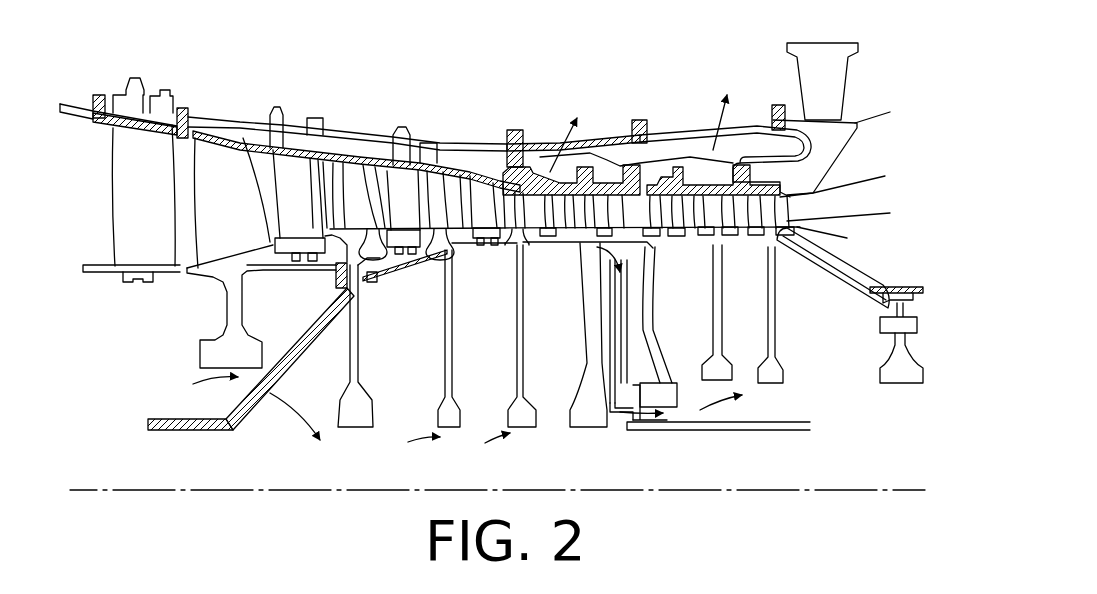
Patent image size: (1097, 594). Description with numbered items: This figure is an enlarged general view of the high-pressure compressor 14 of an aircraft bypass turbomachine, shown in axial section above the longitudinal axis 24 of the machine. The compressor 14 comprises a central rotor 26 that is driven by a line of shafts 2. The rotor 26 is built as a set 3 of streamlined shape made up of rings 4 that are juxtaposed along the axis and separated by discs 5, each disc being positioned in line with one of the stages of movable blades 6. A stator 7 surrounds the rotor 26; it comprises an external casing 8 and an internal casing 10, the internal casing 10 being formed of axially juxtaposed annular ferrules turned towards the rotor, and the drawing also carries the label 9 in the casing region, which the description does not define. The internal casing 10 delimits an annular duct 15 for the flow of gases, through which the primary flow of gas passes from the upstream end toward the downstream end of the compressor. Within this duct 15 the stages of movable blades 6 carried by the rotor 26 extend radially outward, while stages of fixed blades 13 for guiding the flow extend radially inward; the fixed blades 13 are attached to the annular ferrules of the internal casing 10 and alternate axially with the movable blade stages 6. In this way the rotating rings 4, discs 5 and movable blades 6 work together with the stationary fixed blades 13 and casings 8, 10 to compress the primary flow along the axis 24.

The line of shafts 2 is at (177, 416).
The set of streamlined shape 3 is at (284, 350).
The rings 4 is at (404, 268).
The discs 5 is at (441, 360).
The stages of movable blades 6 is at (445, 190).
The stator 7 is at (609, 133).
The external casing 8 is at (745, 128).
The stator shroud ring 9 is at (770, 160).
The internal casing 10 is at (735, 238).
The stages of fixed blades 13 is at (650, 228).
The high-pressure compressor 14 is at (596, 65).
The annular duct 15 is at (187, 233).
The longitudinal axis 24 is at (82, 490).
The central rotor 26 is at (850, 258).